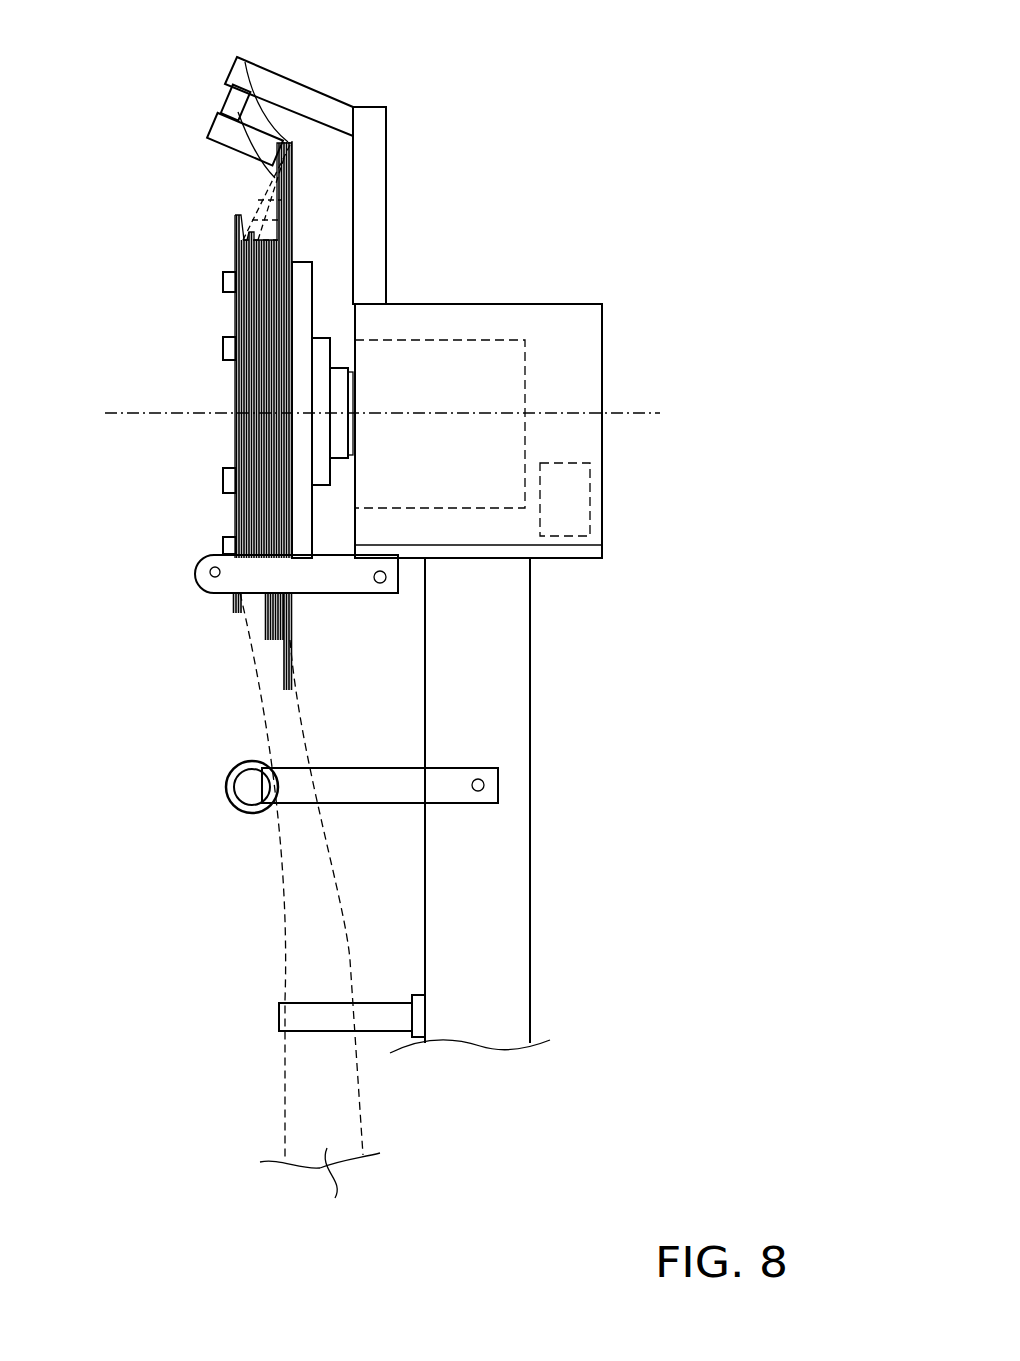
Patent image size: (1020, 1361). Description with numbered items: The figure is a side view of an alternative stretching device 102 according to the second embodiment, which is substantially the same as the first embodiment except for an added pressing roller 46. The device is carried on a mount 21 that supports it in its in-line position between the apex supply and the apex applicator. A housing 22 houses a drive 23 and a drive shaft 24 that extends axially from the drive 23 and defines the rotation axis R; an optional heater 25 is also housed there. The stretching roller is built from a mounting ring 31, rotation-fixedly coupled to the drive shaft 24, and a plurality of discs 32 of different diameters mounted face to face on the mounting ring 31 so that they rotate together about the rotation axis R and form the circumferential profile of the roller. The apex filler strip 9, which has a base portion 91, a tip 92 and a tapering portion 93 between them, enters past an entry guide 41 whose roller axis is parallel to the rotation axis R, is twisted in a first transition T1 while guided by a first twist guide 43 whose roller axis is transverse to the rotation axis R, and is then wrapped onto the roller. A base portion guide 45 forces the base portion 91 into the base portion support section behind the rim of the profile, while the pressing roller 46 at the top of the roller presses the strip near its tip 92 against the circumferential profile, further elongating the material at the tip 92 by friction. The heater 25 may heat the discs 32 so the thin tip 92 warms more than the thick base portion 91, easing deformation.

The alternative stretching device 102 is at (578, 130).
The housing 22 is at (592, 304).
The drive 23 is at (436, 363).
The drive shaft 24 is at (343, 338).
The heater 25 is at (575, 508).
The mount 21 is at (510, 740).
The mounting ring 31 is at (300, 312).
The discs 32 is at (236, 385).
The base portion guide 45 is at (197, 575).
The first twist guide 43 is at (243, 787).
The entry guide 41 is at (295, 1017).
The pressing roller 46 is at (232, 130).
The apex filler strip 9 is at (273, 728).
The base portion 91 is at (255, 217).
The tip 92 is at (362, 1118).
The tapering portion 93 is at (238, 112).
The rotation axis R is at (372, 414).
The first transition T1 is at (303, 925).